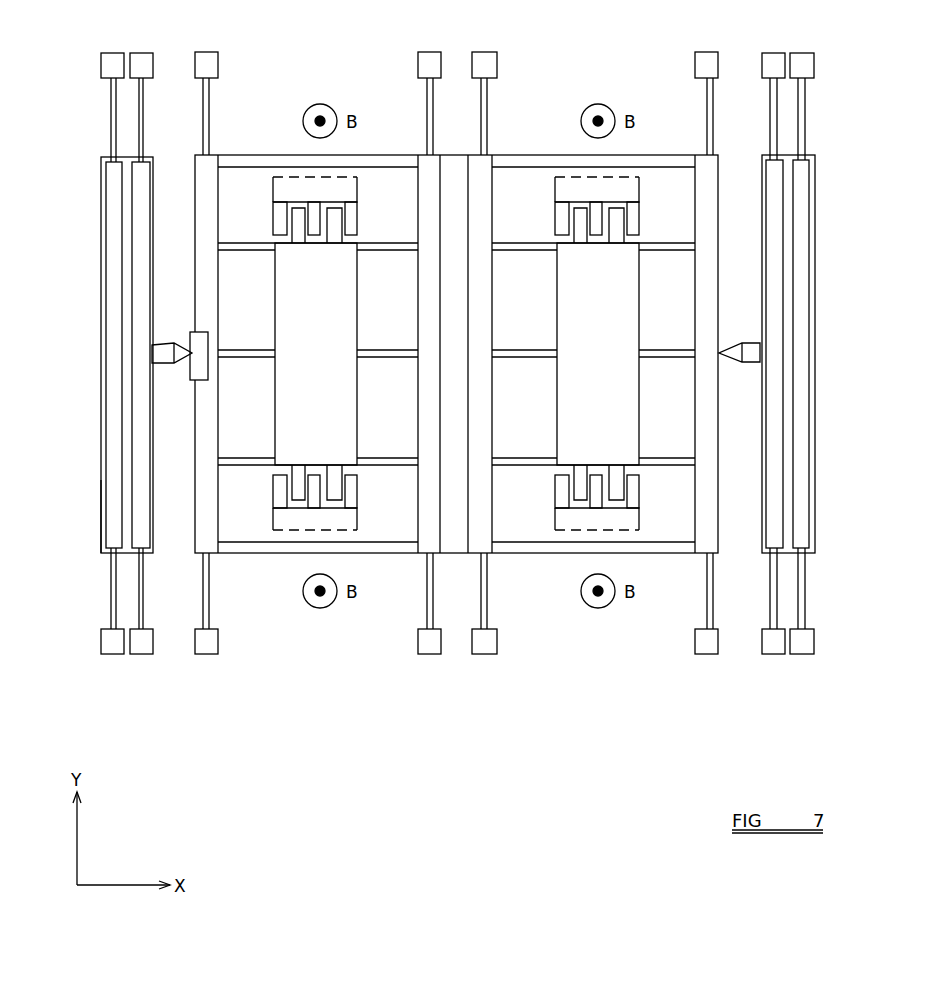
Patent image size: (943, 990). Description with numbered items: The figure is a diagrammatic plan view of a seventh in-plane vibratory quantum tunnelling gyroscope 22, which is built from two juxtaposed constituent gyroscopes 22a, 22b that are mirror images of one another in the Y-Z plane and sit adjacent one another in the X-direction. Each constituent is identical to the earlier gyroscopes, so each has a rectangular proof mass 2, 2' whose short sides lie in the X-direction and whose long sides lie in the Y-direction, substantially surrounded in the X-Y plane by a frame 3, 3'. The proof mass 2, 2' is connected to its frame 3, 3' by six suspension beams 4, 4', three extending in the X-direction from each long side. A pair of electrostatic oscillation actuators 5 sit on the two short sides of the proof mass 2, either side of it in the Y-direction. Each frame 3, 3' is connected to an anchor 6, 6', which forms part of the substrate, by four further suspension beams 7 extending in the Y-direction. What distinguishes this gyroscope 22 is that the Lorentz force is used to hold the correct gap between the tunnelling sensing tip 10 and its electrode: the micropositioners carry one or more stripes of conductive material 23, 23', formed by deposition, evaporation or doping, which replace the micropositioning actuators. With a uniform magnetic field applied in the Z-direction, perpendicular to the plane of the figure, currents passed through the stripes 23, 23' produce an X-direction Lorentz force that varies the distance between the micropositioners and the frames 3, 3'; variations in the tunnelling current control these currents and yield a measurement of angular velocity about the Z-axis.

The proof mass 2 is at (341, 354).
The proof mass 2' is at (577, 354).
The frame 3 is at (442, 354).
The frame 3' is at (590, 354).
The suspension beams 4 is at (318, 354).
The suspension beams 4' is at (593, 354).
The electrostatic oscillation actuators 5 is at (338, 488).
The anchor 6 is at (318, 39).
The anchor 6' is at (788, 357).
The further suspension beams 7 is at (427, 96).
The tunnelling sensing tip 10 is at (169, 343).
The seventh gyroscope 22 is at (83, 207).
The constituent gyroscope 22a is at (103, 512).
The constituent gyroscope 22b is at (817, 375).
The stripes of conductive material 23 is at (102, 355).
The stripes of conductive material 23' is at (816, 354).